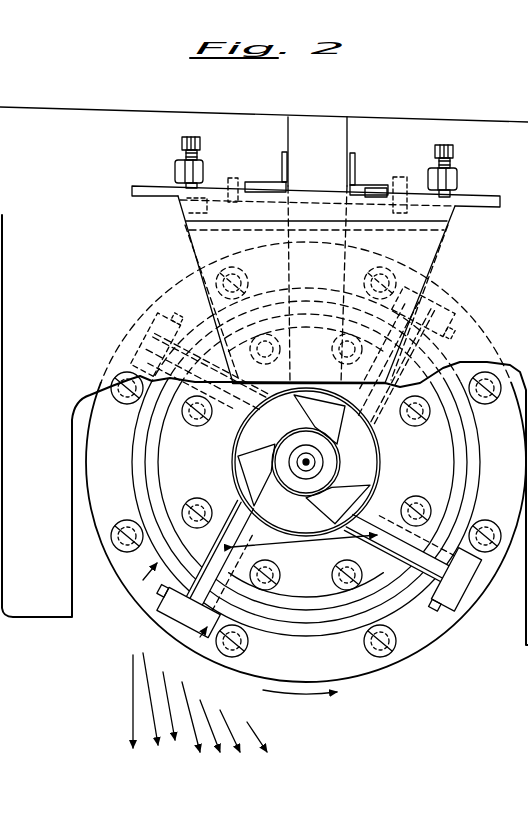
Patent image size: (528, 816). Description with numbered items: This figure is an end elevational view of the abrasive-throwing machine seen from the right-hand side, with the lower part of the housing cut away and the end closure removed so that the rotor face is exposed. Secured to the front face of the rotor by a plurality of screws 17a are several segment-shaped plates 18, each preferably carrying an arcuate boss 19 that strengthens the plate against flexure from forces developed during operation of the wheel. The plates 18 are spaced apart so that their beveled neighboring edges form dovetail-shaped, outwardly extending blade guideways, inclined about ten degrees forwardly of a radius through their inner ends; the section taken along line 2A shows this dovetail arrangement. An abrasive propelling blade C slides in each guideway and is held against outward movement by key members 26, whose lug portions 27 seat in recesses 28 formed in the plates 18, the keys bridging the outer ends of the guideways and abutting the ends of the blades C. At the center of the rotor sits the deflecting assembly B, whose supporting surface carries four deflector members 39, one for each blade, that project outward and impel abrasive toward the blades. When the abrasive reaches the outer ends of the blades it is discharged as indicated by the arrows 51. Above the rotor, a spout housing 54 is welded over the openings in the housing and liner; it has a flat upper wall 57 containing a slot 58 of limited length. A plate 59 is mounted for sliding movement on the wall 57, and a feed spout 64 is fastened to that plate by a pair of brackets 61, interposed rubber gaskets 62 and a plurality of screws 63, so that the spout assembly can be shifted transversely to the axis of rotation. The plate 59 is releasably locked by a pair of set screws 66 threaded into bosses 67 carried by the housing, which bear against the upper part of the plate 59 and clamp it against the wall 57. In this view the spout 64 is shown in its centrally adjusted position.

The screws 17a is at (121, 403).
The segment-shaped plates 18 is at (207, 473).
The arcuate boss 19 is at (300, 620).
The key members 26 is at (160, 610).
The lug portions 27 is at (157, 590).
The recesses 28 is at (212, 630).
The deflector members 39 is at (360, 474).
The arrows 51 is at (130, 702).
The spout housing 54 is at (437, 247).
The flat upper wall 57 is at (182, 218).
The slot 58 is at (238, 197).
The plate 59 is at (163, 190).
The brackets 61 is at (272, 182).
The rubber gaskets 62 is at (358, 182).
The screws 63 is at (373, 188).
The feed spout 64 is at (326, 170).
The set screws 66 is at (187, 137).
The bosses 67 is at (462, 175).
The deflecting assembly B is at (380, 454).
The abrasive propelling blade C is at (304, 544).
The section line 2A is at (197, 607).